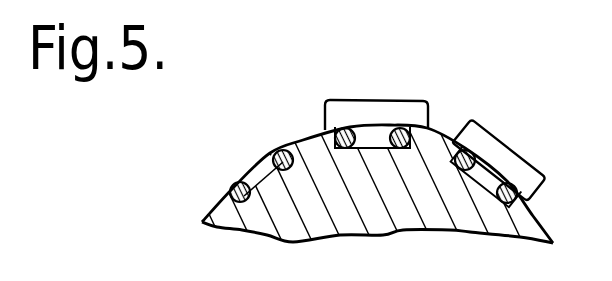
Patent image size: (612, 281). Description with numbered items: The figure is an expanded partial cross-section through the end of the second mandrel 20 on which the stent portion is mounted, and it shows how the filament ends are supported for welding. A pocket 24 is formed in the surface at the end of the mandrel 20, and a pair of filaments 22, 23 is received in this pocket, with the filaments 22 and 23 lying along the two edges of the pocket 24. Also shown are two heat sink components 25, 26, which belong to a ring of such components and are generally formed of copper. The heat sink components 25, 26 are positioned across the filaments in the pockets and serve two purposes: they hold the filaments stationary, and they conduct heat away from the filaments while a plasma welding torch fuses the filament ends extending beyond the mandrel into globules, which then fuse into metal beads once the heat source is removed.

The second mandrel 20 is at (423, 183).
The filament 22 is at (278, 152).
The filament 23 is at (233, 183).
The pocket 24 is at (260, 165).
The heat sink component 25 is at (395, 102).
The heat sink component 26 is at (515, 155).